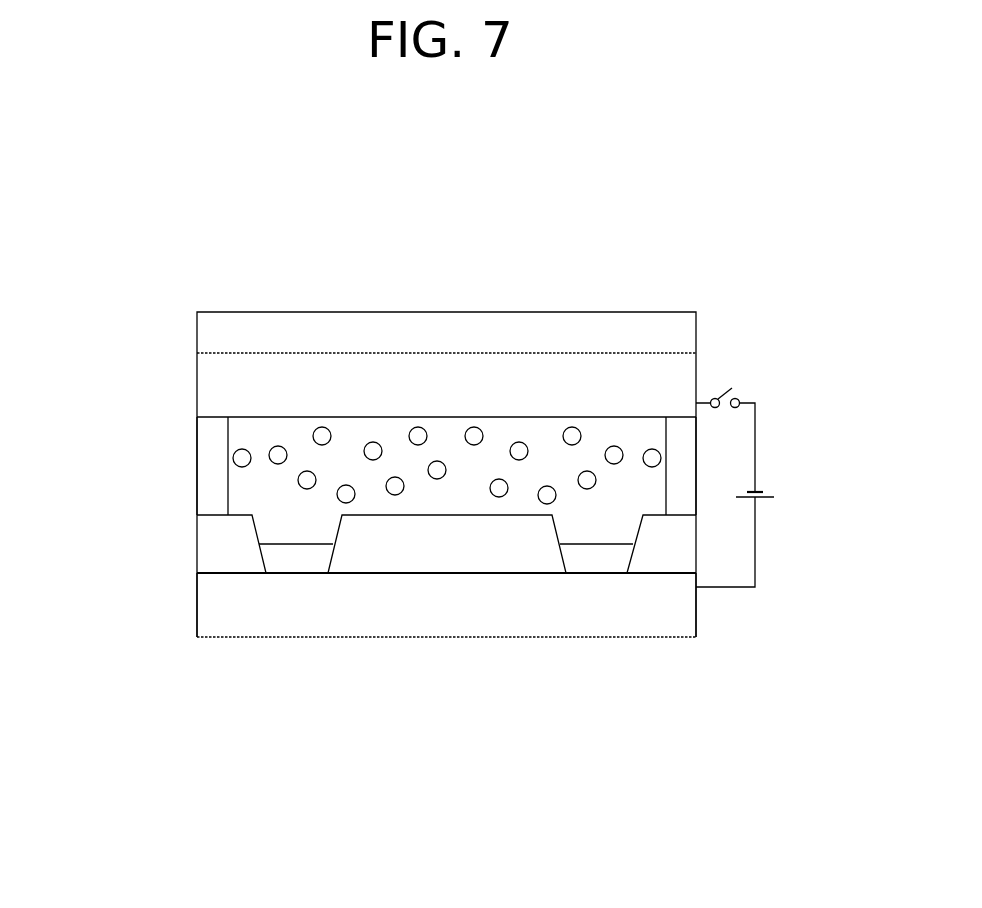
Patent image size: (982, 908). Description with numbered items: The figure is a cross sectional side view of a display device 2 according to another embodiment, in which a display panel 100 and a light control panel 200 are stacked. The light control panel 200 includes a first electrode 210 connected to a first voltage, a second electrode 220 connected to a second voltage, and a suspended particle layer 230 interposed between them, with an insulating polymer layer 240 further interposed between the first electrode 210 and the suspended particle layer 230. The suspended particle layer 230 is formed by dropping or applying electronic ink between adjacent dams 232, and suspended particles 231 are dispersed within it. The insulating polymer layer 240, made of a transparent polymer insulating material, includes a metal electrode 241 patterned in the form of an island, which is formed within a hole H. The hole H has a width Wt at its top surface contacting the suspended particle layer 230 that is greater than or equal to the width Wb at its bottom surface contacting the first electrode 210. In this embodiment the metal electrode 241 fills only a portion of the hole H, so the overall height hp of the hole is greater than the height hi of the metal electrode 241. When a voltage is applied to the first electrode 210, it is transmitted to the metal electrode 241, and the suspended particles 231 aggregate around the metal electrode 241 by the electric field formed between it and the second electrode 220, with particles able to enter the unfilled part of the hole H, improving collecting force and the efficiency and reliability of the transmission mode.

The display device 2 is at (583, 279).
The display panel 100 is at (197, 327).
The light control panel 200 is at (57, 625).
The first electrode 210 is at (197, 612).
The second electrode 220 is at (197, 377).
The suspended particle layer 230 is at (116, 430).
The suspended particles 231 is at (228, 458).
The dams 232 is at (209, 434).
The insulating polymer layer 240 is at (197, 530).
The metal electrode 241 is at (277, 555).
The hole H is at (340, 552).
The width at the bottom surface of the hole Wb is at (328, 703).
The width at the top surface of the hole Wt is at (342, 739).
The height of the metal electrode hi is at (778, 515).
The overall height of the hole hp is at (815, 515).